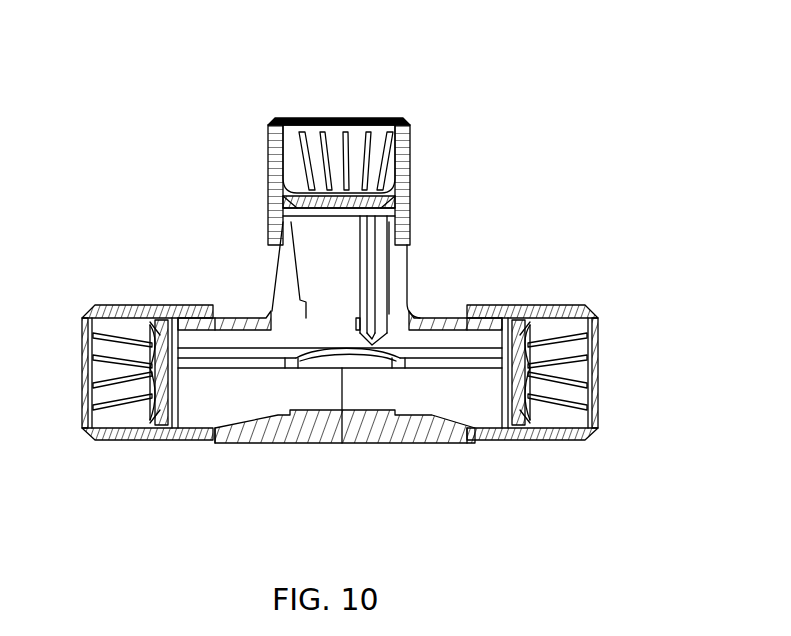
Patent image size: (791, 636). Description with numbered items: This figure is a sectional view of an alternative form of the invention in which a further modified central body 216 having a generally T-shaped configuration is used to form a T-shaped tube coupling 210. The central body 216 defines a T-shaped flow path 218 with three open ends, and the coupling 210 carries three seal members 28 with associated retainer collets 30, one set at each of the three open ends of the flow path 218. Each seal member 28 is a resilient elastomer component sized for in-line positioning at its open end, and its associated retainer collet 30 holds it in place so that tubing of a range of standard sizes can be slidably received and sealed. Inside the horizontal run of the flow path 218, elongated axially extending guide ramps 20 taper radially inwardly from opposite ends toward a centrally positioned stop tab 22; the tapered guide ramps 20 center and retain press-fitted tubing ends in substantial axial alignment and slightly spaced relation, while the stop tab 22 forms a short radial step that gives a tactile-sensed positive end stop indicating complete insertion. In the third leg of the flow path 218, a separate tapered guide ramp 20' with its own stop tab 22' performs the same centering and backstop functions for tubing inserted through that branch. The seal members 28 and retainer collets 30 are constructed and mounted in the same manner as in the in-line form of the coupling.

The T-shaped tube coupling 210 is at (488, 104).
The retainer collet 30 is at (272, 128).
The seal member 28 is at (158, 318).
The guide ramp 20 is at (343, 388).
The tapered guide ramp 20' is at (390, 263).
The stop tab 22 is at (348, 373).
The stop tab 22' is at (346, 280).
The T-shaped flow path 218 is at (234, 410).
The central body 216 is at (343, 443).